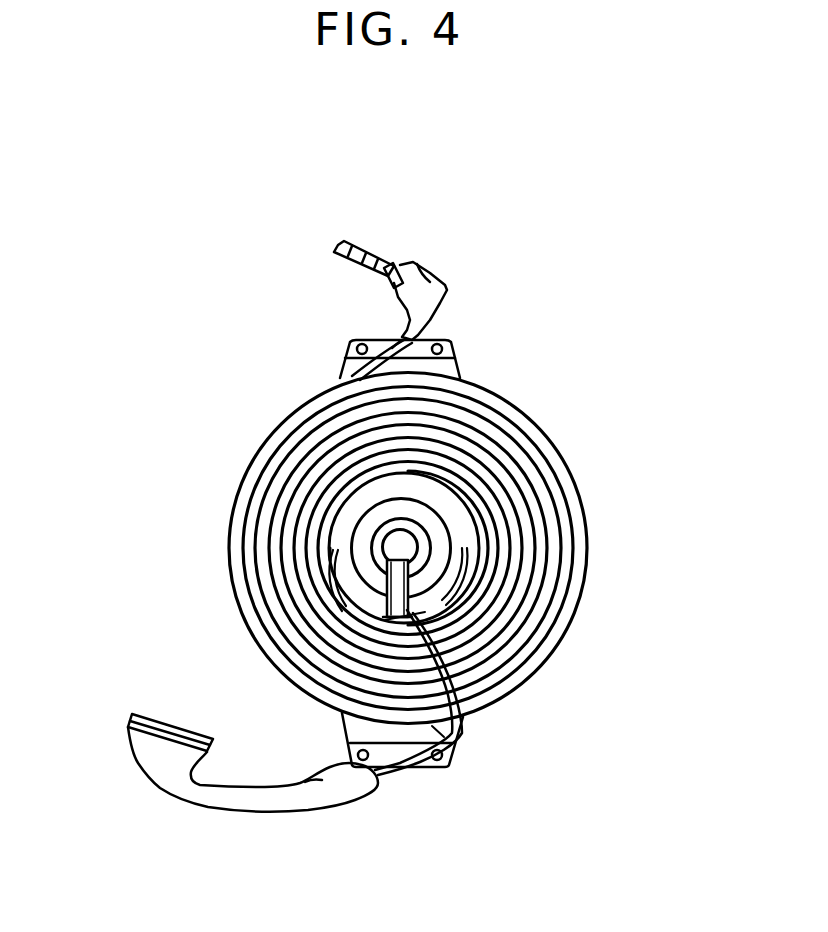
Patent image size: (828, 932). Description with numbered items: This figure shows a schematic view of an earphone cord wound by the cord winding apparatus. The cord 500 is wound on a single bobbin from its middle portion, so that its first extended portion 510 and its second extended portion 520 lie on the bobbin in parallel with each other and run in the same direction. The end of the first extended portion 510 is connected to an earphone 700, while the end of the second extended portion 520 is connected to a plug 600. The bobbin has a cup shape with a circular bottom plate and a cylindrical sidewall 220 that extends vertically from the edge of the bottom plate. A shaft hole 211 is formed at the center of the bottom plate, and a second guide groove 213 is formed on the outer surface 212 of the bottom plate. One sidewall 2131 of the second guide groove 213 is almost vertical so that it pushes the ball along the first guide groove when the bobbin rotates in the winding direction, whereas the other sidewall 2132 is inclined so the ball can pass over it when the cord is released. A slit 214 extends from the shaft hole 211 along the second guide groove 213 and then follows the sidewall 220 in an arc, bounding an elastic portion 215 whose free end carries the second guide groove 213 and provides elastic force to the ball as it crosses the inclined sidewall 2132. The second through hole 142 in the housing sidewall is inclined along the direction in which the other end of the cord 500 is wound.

The cord 500 is at (548, 495).
The plug 600 is at (418, 265).
The second extended portion 520 is at (402, 347).
The first extended portion 510 is at (462, 743).
The earphone 700 is at (220, 795).
The second through hole 142 is at (427, 767).
The shaft hole 211 is at (402, 549).
The outer surface 212 is at (415, 485).
The second guide groove 213 is at (423, 607).
The one sidewall 2131 is at (425, 607).
The other sidewall 2132 is at (330, 552).
The slit 214 is at (340, 585).
The elastic portion 215 is at (347, 601).
The cylindrical sidewall 220 is at (332, 553).